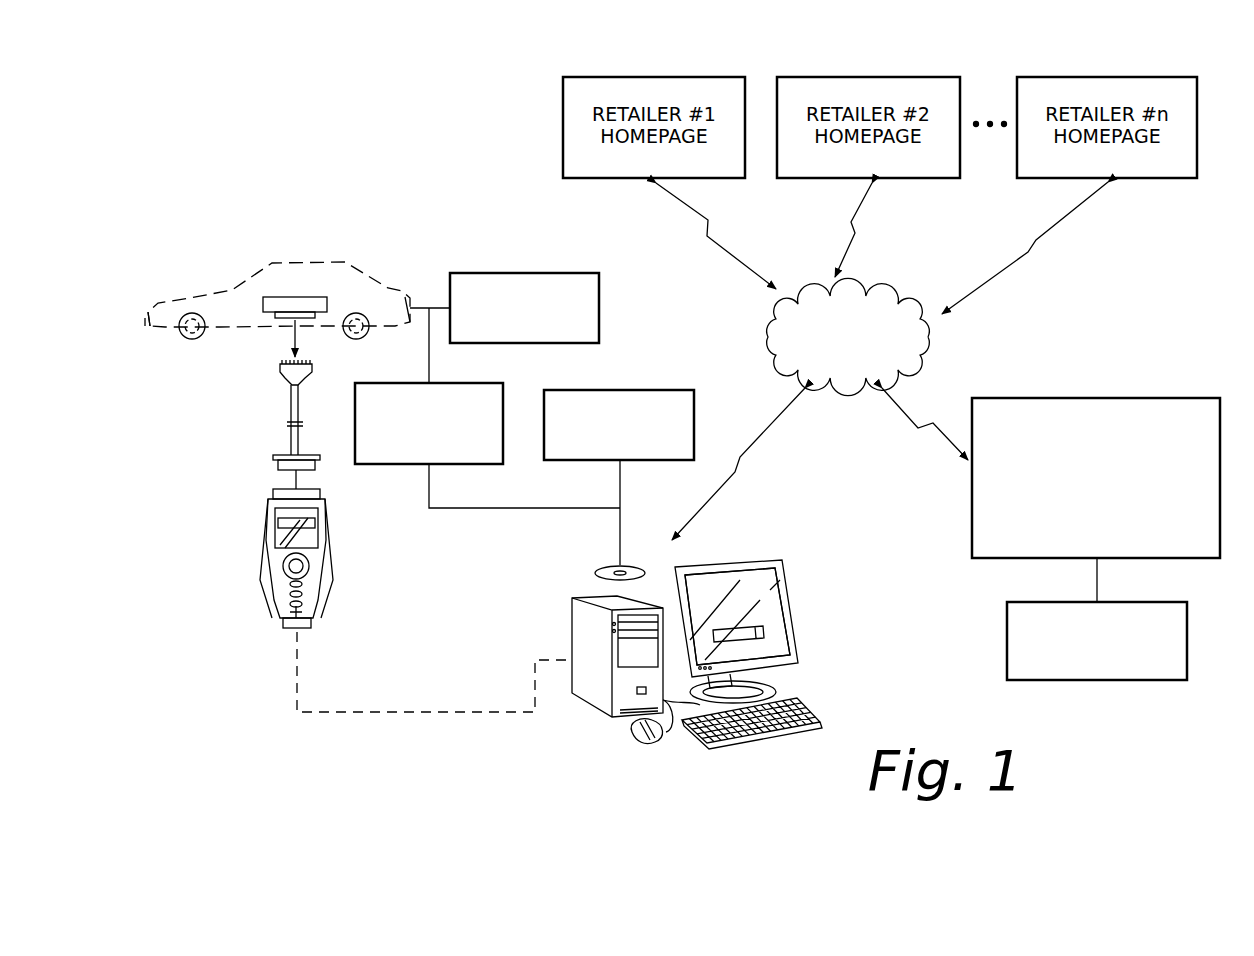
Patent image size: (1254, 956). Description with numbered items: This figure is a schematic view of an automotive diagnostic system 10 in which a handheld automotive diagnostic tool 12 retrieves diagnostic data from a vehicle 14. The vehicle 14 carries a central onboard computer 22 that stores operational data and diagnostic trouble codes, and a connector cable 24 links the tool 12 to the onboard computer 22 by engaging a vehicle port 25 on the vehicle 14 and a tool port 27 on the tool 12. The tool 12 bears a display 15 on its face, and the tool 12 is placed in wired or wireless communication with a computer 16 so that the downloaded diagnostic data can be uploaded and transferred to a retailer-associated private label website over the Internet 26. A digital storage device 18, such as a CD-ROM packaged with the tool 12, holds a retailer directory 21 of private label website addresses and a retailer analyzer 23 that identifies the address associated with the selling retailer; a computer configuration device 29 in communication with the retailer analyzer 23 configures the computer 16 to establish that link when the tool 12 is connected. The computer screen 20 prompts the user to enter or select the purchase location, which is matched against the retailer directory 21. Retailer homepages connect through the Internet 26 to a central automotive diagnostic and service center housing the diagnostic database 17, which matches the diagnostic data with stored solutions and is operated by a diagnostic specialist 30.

The automotive diagnostic system 10 is at (393, 147).
The handheld automotive diagnostic tool 12 is at (266, 597).
The vehicle 14 is at (189, 279).
The display 15 is at (274, 525).
The computer 16 is at (581, 749).
The diagnostic database 17 is at (986, 559).
The digital storage device 18 is at (600, 574).
The computer display screen 20 is at (804, 590).
The retailer directory 21 is at (620, 387).
The onboard computer 22 is at (299, 297).
The retailer analyzer 23 is at (525, 265).
The connector cable 24 is at (291, 406).
The vehicle port 25 is at (278, 318).
The Internet 26 is at (892, 285).
The tool port 27 is at (283, 489).
The computer configuration device 29 is at (397, 464).
The diagnostic specialist 30 is at (1098, 681).